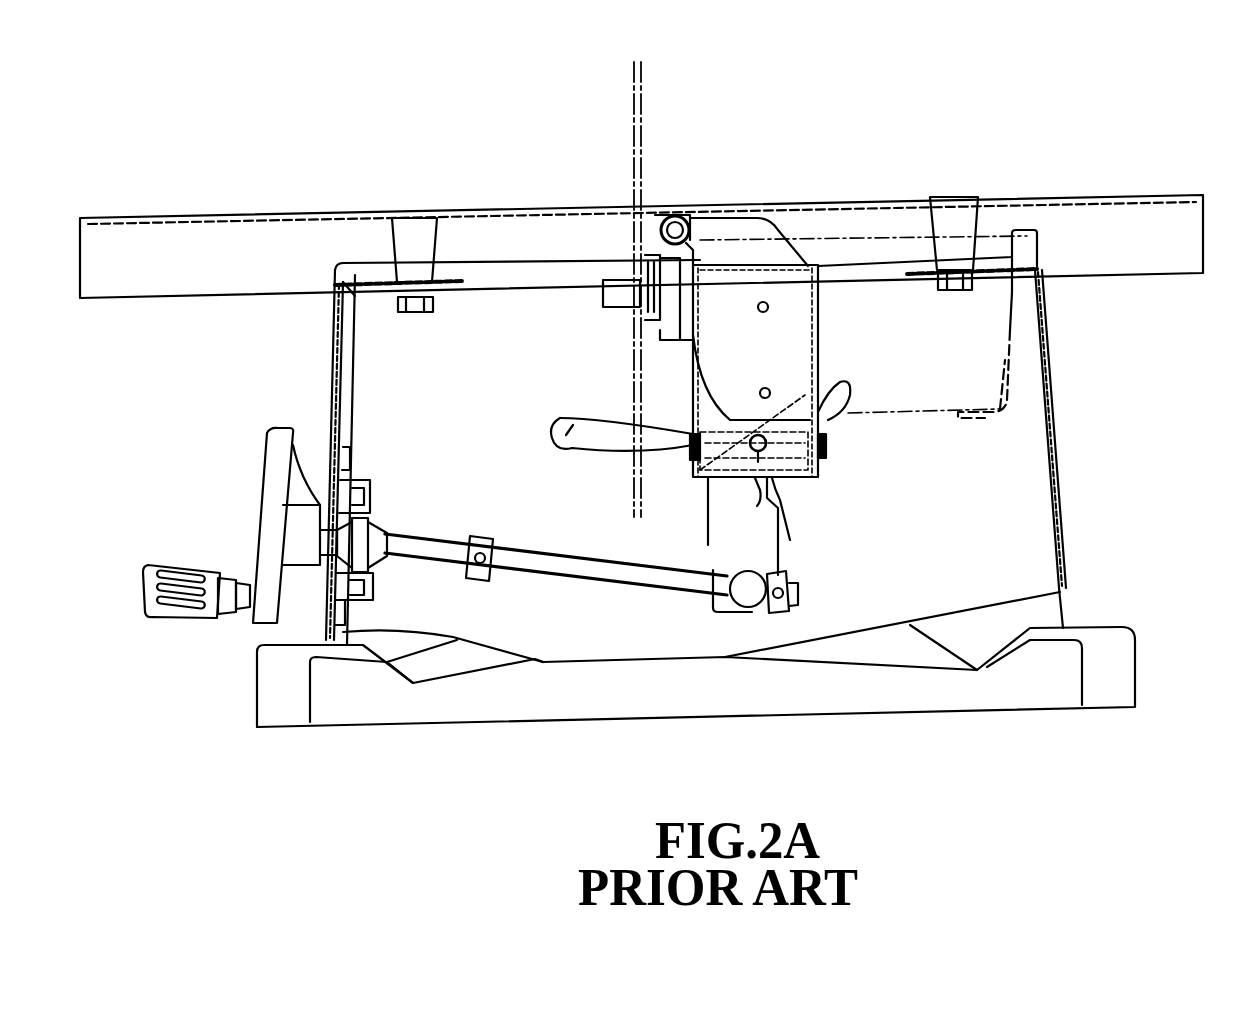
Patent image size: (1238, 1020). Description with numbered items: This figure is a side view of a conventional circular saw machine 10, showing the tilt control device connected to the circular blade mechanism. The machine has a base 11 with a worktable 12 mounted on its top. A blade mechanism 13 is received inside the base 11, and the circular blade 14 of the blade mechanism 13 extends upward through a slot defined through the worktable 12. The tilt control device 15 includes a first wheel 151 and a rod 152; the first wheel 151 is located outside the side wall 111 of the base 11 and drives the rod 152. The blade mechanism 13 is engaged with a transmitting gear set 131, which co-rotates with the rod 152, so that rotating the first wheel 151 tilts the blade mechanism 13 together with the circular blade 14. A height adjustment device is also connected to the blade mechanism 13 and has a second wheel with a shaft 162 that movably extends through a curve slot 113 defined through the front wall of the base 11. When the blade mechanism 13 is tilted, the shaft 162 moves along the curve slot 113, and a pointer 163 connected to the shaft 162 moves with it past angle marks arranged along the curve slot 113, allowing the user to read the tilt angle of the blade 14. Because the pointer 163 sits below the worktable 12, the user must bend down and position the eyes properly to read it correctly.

The circular saw machine 10 is at (325, 182).
The base 11 is at (1055, 465).
The worktable 12 is at (826, 192).
The blade mechanism 13 is at (706, 548).
The circular blade 14 is at (633, 163).
The tilt control device 15 is at (248, 448).
The side wall 111 is at (335, 338).
The curve slot 113 is at (560, 425).
The transmitting gear set 131 is at (746, 592).
The first wheel 151 is at (272, 525).
The rod 152 is at (613, 583).
The shaft 162 is at (758, 440).
The pointer 163 is at (772, 480).